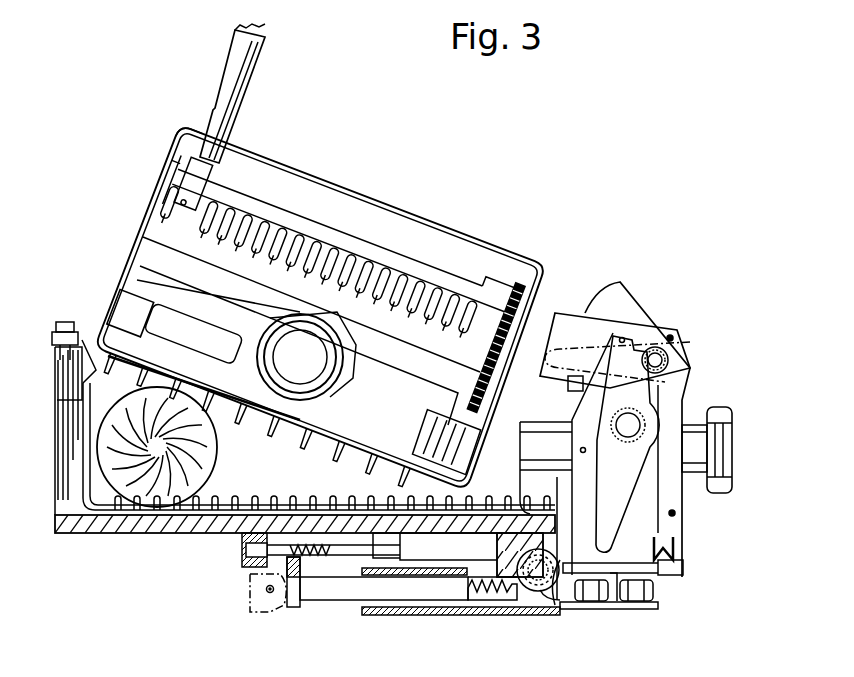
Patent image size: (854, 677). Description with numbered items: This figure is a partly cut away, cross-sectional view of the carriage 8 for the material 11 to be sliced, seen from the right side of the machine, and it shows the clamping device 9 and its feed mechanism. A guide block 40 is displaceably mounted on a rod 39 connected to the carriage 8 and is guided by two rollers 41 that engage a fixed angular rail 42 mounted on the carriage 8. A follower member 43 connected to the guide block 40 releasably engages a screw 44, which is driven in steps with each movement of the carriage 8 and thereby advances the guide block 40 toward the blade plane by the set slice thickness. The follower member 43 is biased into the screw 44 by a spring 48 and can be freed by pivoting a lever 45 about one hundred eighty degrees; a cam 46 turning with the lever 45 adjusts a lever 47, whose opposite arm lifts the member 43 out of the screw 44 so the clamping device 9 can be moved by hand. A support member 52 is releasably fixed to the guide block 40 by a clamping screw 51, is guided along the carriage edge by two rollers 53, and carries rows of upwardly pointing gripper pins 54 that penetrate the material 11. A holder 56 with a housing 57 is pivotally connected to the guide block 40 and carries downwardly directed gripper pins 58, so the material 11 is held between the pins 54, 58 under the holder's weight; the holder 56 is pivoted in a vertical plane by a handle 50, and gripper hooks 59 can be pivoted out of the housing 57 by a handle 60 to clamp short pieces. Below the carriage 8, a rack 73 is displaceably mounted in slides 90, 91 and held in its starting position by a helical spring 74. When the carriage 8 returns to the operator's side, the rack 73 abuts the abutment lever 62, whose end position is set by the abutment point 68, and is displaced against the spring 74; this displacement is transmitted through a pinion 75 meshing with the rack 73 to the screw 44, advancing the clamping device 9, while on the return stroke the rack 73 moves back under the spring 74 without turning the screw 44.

The carriage 8 is at (100, 534).
The clamping device 9 is at (365, 182).
The material 11 is at (205, 473).
The rod 39 is at (635, 425).
The guide block 40 is at (676, 577).
The rollers 41 is at (650, 610).
The angular rail 42 is at (605, 604).
The follower member 43 is at (572, 606).
The screw 44 is at (560, 602).
The lever 45 is at (565, 355).
The cam 46 is at (668, 358).
The lever 47 is at (648, 490).
The spring 48 is at (675, 540).
The handle 50 is at (322, 390).
The clamping screw 51 is at (725, 493).
The support member 52 is at (205, 514).
The rollers 53 is at (60, 345).
The gripper pins 54 is at (320, 505).
The holder 56 is at (287, 167).
The housing 57 is at (186, 129).
The gripper pins 58 is at (288, 437).
The gripper hooks 59 is at (376, 270).
The handle 60 is at (243, 82).
The abutment lever 62 is at (256, 600).
The abutment point 68 is at (284, 610).
The rack 73 is at (331, 602).
The helical spring 74 is at (405, 556).
The pinion 75 is at (528, 585).
The slide 90 is at (243, 565).
The slide 91 is at (440, 614).